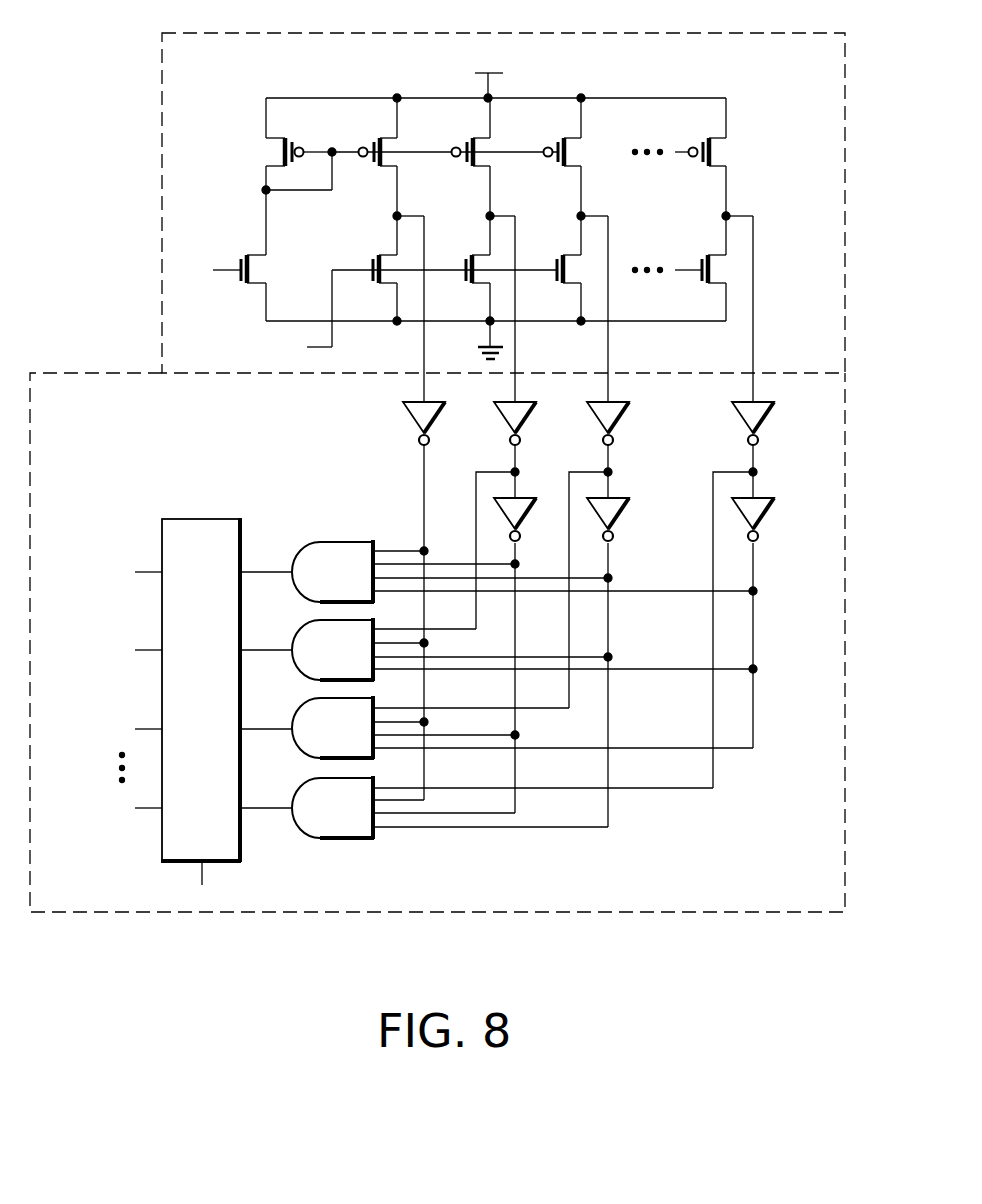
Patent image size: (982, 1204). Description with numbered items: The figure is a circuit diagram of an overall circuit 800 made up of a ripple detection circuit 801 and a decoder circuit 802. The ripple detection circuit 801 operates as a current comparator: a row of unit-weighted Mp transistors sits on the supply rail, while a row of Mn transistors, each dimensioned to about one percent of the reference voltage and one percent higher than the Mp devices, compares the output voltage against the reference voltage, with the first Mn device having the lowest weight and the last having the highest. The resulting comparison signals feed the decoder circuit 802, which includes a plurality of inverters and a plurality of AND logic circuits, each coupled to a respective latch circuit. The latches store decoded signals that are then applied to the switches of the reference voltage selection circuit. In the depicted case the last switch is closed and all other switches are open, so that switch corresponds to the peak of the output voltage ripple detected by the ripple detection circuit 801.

The analog to digital converter circuit 800 is at (437, 512).
The ripple detection circuit 801 is at (822, 321).
The decoder circuit 802 is at (822, 873).